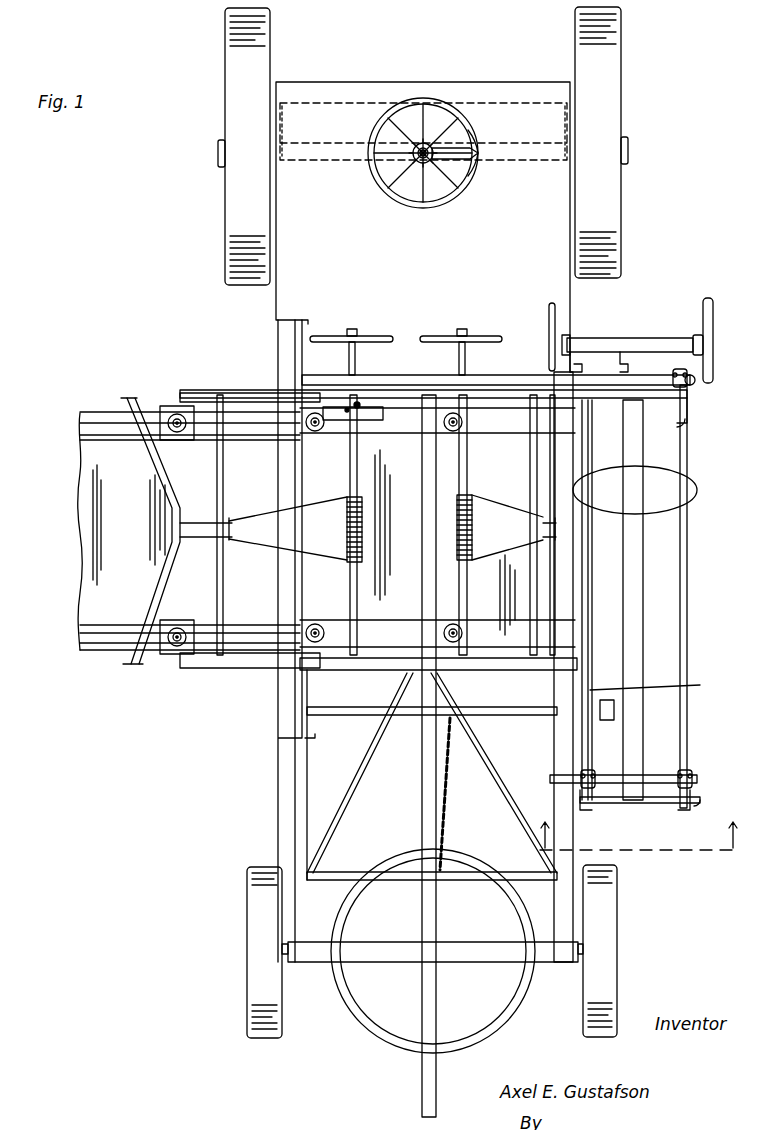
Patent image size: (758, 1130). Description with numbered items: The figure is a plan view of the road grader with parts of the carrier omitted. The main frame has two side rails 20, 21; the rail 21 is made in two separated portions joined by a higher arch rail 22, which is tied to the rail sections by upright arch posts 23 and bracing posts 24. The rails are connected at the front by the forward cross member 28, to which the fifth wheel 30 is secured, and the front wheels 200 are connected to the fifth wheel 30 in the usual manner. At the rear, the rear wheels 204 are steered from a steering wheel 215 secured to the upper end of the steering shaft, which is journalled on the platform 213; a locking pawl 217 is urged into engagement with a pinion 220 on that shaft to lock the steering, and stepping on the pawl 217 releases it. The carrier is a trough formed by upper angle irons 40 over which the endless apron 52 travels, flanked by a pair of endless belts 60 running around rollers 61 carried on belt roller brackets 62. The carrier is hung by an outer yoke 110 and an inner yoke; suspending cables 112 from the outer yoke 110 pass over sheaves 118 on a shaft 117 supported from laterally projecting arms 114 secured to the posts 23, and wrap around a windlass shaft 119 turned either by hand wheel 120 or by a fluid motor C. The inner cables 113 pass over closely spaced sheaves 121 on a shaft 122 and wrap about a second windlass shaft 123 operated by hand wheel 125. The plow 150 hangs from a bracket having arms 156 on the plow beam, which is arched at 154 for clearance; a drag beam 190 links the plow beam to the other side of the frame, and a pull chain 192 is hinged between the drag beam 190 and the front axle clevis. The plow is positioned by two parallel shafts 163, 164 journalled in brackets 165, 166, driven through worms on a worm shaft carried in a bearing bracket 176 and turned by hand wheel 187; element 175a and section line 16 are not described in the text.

The rear wheels 204 is at (423, 146).
The steering wheel 215 is at (378, 186).
The pinion 220 is at (417, 160).
The platform 213 is at (426, 195).
The locking pawl 217 is at (475, 148).
The hand wheel 120 is at (350, 334).
The hand wheel 125 is at (430, 334).
The bracing posts 24 is at (315, 316).
The fluid motor C is at (358, 402).
The arch posts 23 is at (300, 380).
The hand wheel 187 is at (556, 302).
The bearing bracket 176 is at (650, 337).
The bearing bracket 175a is at (572, 336).
The endless apron 52 is at (80, 468).
The upper angle irons 40 is at (80, 418).
The endless belts 60 is at (80, 440).
The outer yoke 110 is at (170, 480).
The shaft 117 is at (221, 462).
The sheaves 118 is at (232, 520).
The suspending cables 112 is at (250, 545).
The rollers 61 is at (178, 628).
The belt roller brackets 62 is at (190, 612).
The laterally projecting arms 114 is at (200, 392).
The windlass shaft 119 is at (350, 470).
The suspending cables 113 is at (505, 514).
The windlass shaft 123 is at (465, 488).
The shaft 122 is at (530, 444).
The sheaves 121 is at (540, 525).
The arch rail 22 is at (283, 720).
The main side rail 21 is at (283, 766).
The main side rail 20 is at (574, 836).
The drag beam 190 is at (525, 710).
The pull chain 192 is at (448, 820).
The forward cross member 28 is at (433, 952).
The fifth wheel 30 is at (505, 1022).
The front wheels 200 is at (247, 913).
The plow 150 is at (697, 490).
The arms 156 is at (652, 458).
The arch 154 is at (645, 612).
The shaft 163 is at (688, 653).
The shaft 164 is at (665, 697).
The bracket 165 is at (692, 388).
The bracket 166 is at (660, 776).
The section line 16- 16 is at (644, 823).